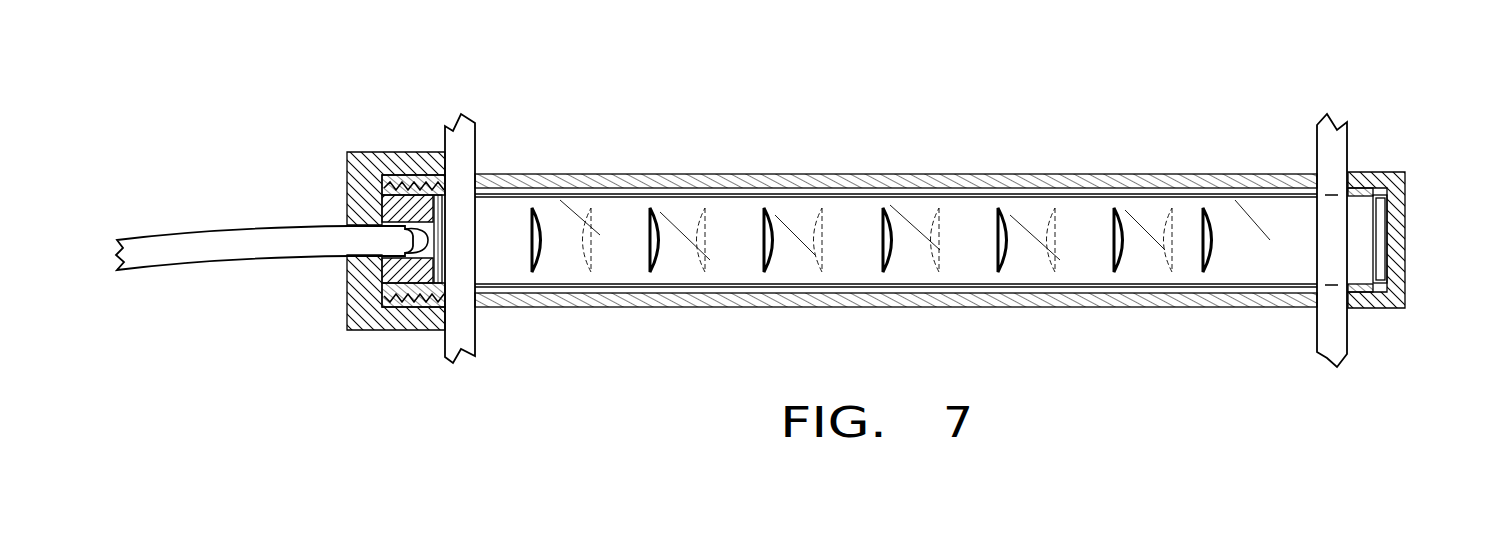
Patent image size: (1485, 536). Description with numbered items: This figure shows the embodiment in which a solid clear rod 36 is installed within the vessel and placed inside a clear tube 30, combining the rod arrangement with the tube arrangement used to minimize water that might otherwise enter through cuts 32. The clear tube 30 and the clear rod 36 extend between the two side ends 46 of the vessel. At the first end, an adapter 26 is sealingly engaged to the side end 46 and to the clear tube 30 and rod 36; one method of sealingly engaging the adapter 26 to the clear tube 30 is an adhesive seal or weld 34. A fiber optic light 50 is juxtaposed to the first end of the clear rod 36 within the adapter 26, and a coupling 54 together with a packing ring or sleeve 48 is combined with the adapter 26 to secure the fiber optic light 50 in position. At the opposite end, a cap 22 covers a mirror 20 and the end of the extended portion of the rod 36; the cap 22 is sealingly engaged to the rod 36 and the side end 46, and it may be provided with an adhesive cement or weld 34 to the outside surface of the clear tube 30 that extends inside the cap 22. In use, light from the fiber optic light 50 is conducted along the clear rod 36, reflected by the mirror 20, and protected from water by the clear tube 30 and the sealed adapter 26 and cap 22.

The mirror 20 is at (1378, 252).
The cap 22 is at (1405, 176).
The adapter 26 is at (409, 175).
The clear tube 30 is at (779, 166).
The cuts 32 is at (1007, 196).
The adhesive seal or weld 34 is at (480, 308).
The clear rod 36 is at (688, 278).
The side end 46 is at (477, 142).
The packing ring or sleeve 48 is at (415, 266).
The fiber optic light 50 is at (305, 224).
The coupling 54 is at (367, 152).